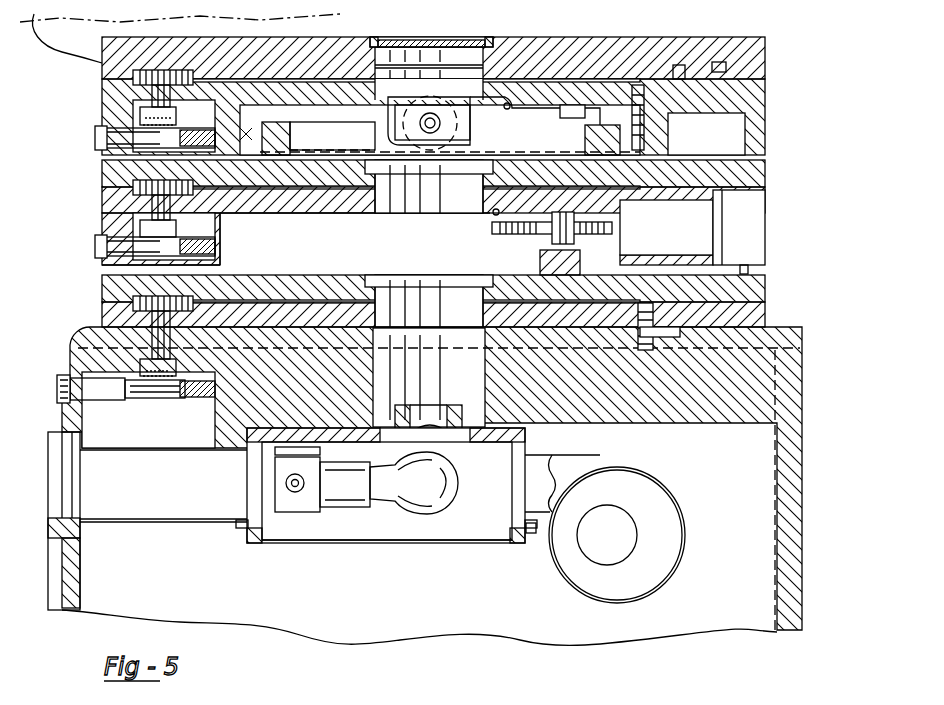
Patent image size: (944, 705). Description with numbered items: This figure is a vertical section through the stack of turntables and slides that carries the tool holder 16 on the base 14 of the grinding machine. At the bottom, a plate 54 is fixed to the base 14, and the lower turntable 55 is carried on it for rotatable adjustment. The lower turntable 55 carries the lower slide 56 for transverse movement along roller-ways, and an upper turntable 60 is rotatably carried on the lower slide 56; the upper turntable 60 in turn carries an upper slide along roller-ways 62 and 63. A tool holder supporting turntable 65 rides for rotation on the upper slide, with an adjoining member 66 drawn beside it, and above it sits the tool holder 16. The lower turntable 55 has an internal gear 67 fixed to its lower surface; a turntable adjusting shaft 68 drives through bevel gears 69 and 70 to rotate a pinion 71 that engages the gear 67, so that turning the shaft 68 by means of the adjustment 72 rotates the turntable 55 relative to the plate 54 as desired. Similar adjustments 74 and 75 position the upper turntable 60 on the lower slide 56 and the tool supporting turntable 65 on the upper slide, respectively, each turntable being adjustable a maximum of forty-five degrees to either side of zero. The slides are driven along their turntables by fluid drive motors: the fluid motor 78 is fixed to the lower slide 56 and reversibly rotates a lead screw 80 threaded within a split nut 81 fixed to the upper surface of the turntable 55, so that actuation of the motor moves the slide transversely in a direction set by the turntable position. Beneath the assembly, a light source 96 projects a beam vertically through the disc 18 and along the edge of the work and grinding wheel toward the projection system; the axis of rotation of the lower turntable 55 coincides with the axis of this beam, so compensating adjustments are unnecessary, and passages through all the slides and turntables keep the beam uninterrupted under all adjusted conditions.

The base 14 is at (76, 344).
The tool holder 16 is at (180, 47).
The disc 18 is at (428, 38).
The plate 54 is at (104, 310).
The lower turntable 55 is at (104, 282).
The lower slide 56 is at (104, 208).
The upper turntable 60 is at (104, 167).
The roller-way 62 is at (247, 134).
The roller-way 63 is at (616, 120).
The tool holder supporting turntable 65 is at (538, 48).
The lower plate of first slide 66 is at (104, 101).
The internal gear 67 is at (205, 298).
The turntable adjusting shaft 68 is at (150, 392).
The bevel gear 69 is at (182, 394).
The bevel gear 70 is at (130, 392).
The pinion 71 is at (144, 298).
The adjustment 72 is at (57, 388).
The adjustment 74 is at (98, 247).
The adjustment 75 is at (98, 140).
The fluid drive motor 78 is at (700, 232).
The lead screw 80 is at (580, 230).
The split nut 81 is at (548, 240).
The light source 96 is at (488, 502).